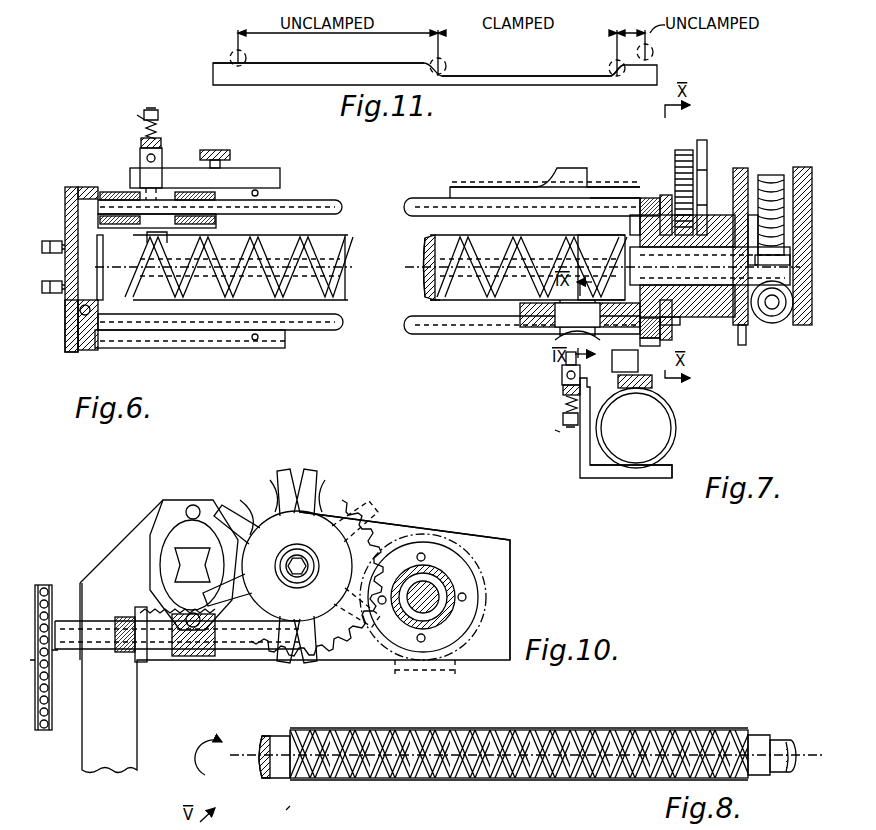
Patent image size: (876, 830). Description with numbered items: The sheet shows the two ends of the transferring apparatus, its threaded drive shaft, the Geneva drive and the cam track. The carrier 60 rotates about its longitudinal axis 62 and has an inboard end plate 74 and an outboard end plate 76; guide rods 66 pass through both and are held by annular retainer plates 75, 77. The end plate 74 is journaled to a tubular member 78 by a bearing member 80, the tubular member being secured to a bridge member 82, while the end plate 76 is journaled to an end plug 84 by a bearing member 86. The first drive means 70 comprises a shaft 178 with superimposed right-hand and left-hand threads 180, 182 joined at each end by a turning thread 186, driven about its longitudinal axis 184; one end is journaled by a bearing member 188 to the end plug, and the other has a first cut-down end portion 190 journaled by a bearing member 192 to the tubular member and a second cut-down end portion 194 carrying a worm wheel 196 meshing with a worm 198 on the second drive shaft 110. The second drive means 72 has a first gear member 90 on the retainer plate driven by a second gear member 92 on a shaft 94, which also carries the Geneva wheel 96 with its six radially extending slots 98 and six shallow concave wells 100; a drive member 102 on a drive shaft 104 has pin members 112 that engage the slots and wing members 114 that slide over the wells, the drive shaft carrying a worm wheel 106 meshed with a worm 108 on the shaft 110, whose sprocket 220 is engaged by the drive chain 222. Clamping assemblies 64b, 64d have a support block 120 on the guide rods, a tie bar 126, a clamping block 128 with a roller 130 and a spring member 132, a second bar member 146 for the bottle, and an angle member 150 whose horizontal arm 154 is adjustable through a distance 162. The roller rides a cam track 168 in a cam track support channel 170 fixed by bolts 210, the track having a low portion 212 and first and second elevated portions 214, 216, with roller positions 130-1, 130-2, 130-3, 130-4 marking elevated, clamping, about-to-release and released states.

In FIG. 7, the carrier 60 is at (597, 141).
In FIG. 7, the longitudinal axis 62 is at (425, 300).
In FIG. 6, the clamping assembly 64b is at (137, 115).
In FIG. 7, the clamping assembly 64d is at (555, 430).
In FIG. 6, the guide rods 66 is at (312, 203).
In FIG. 7, the guide rods 66 is at (434, 197).
In FIG. 6, the first drive means 70 is at (305, 303).
In FIG. 8, the first drive means 70 is at (636, 712).
In FIG. 10, the second drive means 72 is at (208, 470).
In FIG. 7, the end plate 74 is at (650, 197).
In FIG. 7, the annular retainer plate 75 is at (666, 195).
In FIG. 10, the annular retainer plate 75 is at (447, 624).
In FIG. 6, the end plate 76 is at (88, 188).
In FIG. 6, the annular retainer plate 77 is at (70, 187).
In FIG. 7, the tubular member 78 is at (742, 168).
In FIG. 10, the tubular member 78 is at (456, 590).
In FIG. 7, the bearing member 80 is at (640, 220).
In FIG. 7, the bridge member 82 is at (745, 346).
In FIG. 6, the end plug 84 is at (62, 244).
In FIG. 6, the bearing member 86 is at (98, 312).
In FIG. 7, the first gear member 90 is at (680, 322).
In FIG. 10, the first gear member 90 is at (430, 555).
In FIG. 7, the second gear member 92 is at (690, 150).
In FIG. 10, the second gear member 92 is at (338, 632).
In FIG. 10, the shaft 94 is at (320, 566).
In FIG. 7, the Geneva wheel 96 is at (708, 145).
In FIG. 10, the Geneva wheel 96 is at (328, 490).
In FIG. 10, the radially extending slots 98 is at (296, 480).
In FIG. 10, the concave wells 100 is at (265, 498).
In FIG. 10, the drive member 102 is at (168, 518).
In FIG. 7, the drive shaft 104 is at (765, 175).
In FIG. 7, the worm wheel 106 is at (798, 168).
In FIG. 10, the worm wheel 106 is at (150, 590).
In FIG. 10, the worm 108 is at (168, 661).
In FIG. 7, the second drive shaft 110 is at (780, 318).
In FIG. 10, the second drive shaft 110 is at (125, 661).
In FIG. 10, the pin members 112 is at (193, 505).
In FIG. 10, the wing members 114 is at (212, 548).
In FIG. 6, the support block 120 is at (216, 222).
In FIG. 7, the support block 120 is at (520, 318).
In FIG. 6, the tie bar 126 is at (158, 113).
In FIG. 7, the tie bar 126 is at (565, 426).
In FIG. 8, the tie bar 126 is at (287, 812).
In FIG. 6, the clamping block 128 is at (140, 140).
In FIG. 7, the clamping block 128 is at (563, 390).
In FIG. 6, the roller 130 is at (140, 155).
In FIG. 7, the roller 130 is at (560, 372).
In FIG. 11, the roller position 130-1 is at (226, 57).
In FIG. 11, the roller position 130-2 is at (430, 59).
In FIG. 11, the roller position 130-3 is at (610, 67).
In FIG. 11, the roller position 130-4 is at (654, 52).
In FIG. 6, the spring member 132 is at (160, 128).
In FIG. 7, the spring member 132 is at (565, 405).
In FIG. 7, the second bar member 146 is at (655, 385).
In FIG. 7, the angle member 150 is at (632, 482).
In FIG. 7, the horizontal arm 154 is at (668, 471).
In FIG. 7, the adjustment distance 162 is at (425, 268).
In FIG. 11, the cam track 168 is at (530, 85).
In FIG. 6, the cam track 168 is at (215, 350).
In FIG. 7, the cam track 168 is at (472, 186).
In FIG. 6, the cam track support channel 170 is at (118, 348).
In FIG. 7, the cam track support channel 170 is at (618, 190).
In FIG. 6, the shaft 178 is at (343, 245).
In FIG. 7, the shaft 178 is at (537, 245).
In FIG. 10, the shaft 178 is at (434, 592).
In FIG. 8, the shaft 178 is at (710, 730).
In FIG. 8, the right-hand thread 180 is at (512, 729).
In FIG. 8, the left-hand thread 182 is at (468, 729).
In FIG. 8, the longitudinal axis 184 is at (240, 763).
In FIG. 6, the turning thread 186 is at (152, 282).
In FIG. 7, the turning thread 186 is at (578, 290).
In FIG. 8, the turning thread 186 is at (755, 750).
In FIG. 6, the bearing member 188 is at (100, 256).
In FIG. 7, the first cut-down end portion 190 is at (732, 275).
In FIG. 7, the bearing member 192 is at (708, 251).
In FIG. 7, the second cut-down end portion 194 is at (790, 252).
In FIG. 7, the worm wheel 196 is at (790, 226).
In FIG. 7, the worm 198 is at (765, 320).
In FIG. 10, the worm 198 is at (430, 656).
In FIG. 6, the bolts 210 is at (72, 353).
In FIG. 7, the bolts 210 is at (660, 346).
In FIG. 11, the low portion 212 is at (510, 76).
In FIG. 7, the low portion 212 is at (512, 186).
In FIG. 11, the first elevated portion 214 is at (337, 63).
In FIG. 6, the first elevated portion 214 is at (240, 168).
In FIG. 11, the second elevated portion 216 is at (620, 66).
In FIG. 7, the second elevated portion 216 is at (572, 168).
In FIG. 10, the sprocket 220 is at (56, 585).
In FIG. 10, the drive chain 222 is at (44, 731).